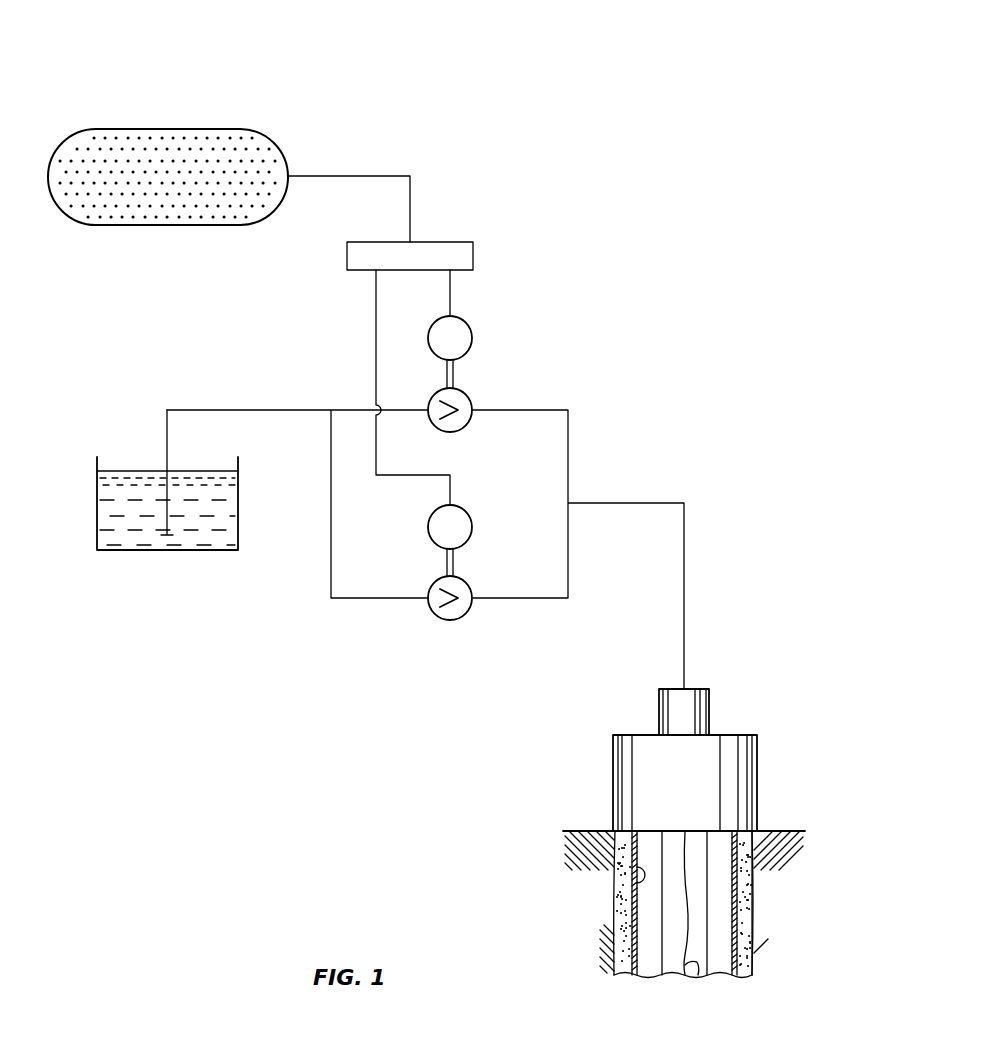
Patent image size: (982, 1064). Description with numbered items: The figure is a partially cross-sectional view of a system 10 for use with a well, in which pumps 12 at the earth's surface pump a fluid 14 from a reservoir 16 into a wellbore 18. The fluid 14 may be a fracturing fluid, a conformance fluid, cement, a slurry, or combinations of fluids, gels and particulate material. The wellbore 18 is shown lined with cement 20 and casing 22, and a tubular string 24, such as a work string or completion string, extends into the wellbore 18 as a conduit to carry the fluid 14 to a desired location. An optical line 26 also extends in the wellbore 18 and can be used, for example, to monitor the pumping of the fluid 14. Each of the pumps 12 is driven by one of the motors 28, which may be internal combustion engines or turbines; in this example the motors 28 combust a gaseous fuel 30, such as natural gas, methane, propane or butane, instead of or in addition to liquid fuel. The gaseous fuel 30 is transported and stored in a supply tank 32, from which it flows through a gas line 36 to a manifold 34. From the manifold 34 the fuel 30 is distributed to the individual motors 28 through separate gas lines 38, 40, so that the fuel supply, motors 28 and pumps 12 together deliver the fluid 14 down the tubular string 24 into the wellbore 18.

The system 10 is at (637, 190).
The pumps 12 is at (468, 426).
The fluid 14 is at (210, 470).
The reservoir 16 is at (97, 507).
The wellbore 18 is at (632, 882).
The cement 20 is at (753, 885).
The casing 22 is at (738, 908).
The tubular string 24 is at (660, 915).
The optical line 26 is at (698, 976).
The motors 28 is at (473, 336).
The gaseous fuel 30 is at (238, 150).
The supply tank 32 is at (137, 226).
The manifold 34 is at (462, 242).
The gas line 36 is at (412, 198).
The gas line 38 is at (375, 315).
The gas line 40 is at (452, 288).